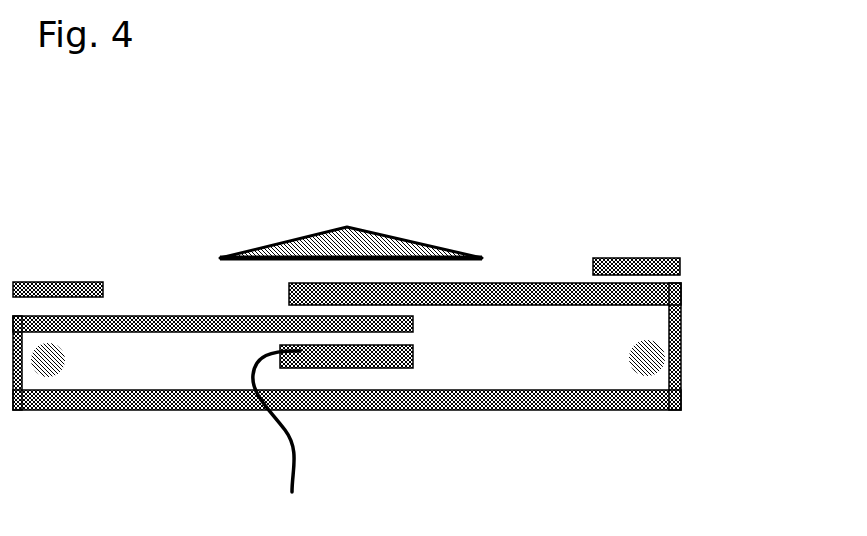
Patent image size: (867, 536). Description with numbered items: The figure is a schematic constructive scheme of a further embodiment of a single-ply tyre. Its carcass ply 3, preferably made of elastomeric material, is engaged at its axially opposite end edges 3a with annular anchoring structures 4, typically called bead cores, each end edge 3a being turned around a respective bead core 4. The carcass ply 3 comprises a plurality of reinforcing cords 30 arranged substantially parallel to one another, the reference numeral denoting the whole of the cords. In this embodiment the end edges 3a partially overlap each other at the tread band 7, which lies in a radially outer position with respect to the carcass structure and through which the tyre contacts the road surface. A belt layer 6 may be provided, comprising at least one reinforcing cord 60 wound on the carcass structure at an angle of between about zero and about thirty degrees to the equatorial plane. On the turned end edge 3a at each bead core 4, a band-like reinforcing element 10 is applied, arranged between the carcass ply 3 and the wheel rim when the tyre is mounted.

The carcass ply 3 is at (347, 357).
The end edges of the carcass ply 3a is at (228, 316).
The annular anchoring structures 4 is at (55, 372).
The belt layer 6 is at (413, 355).
The tread band 7 is at (347, 225).
The band-like reinforcing element 10 is at (33, 282).
The reinforcing cords 30 is at (200, 410).
The reinforcing cord of the belt layer 60 is at (288, 441).